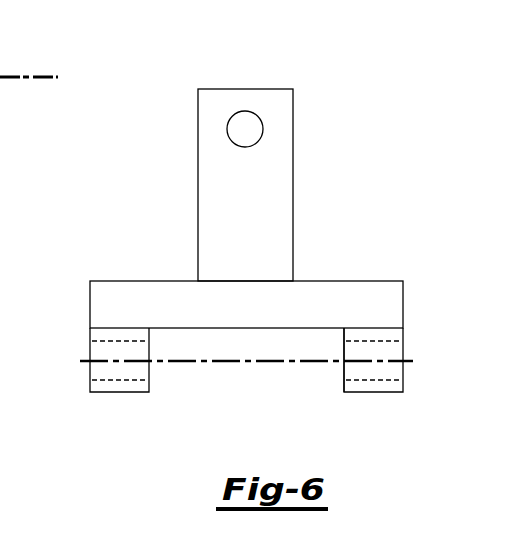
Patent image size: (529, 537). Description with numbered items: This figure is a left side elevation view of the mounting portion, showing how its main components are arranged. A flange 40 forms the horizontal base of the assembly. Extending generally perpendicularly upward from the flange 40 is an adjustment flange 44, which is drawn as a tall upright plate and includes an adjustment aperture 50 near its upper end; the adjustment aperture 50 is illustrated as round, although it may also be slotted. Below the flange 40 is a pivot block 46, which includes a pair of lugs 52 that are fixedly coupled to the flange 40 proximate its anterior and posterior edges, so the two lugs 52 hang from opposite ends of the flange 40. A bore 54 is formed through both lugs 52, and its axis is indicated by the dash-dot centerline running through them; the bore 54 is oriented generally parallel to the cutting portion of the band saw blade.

The flange 40 is at (320, 293).
The adjustment flange 44 is at (280, 110).
The pivot block 46 is at (420, 380).
The adjustment aperture 50 is at (240, 125).
The lugs 52 is at (112, 388).
The bore 54 is at (76, 374).